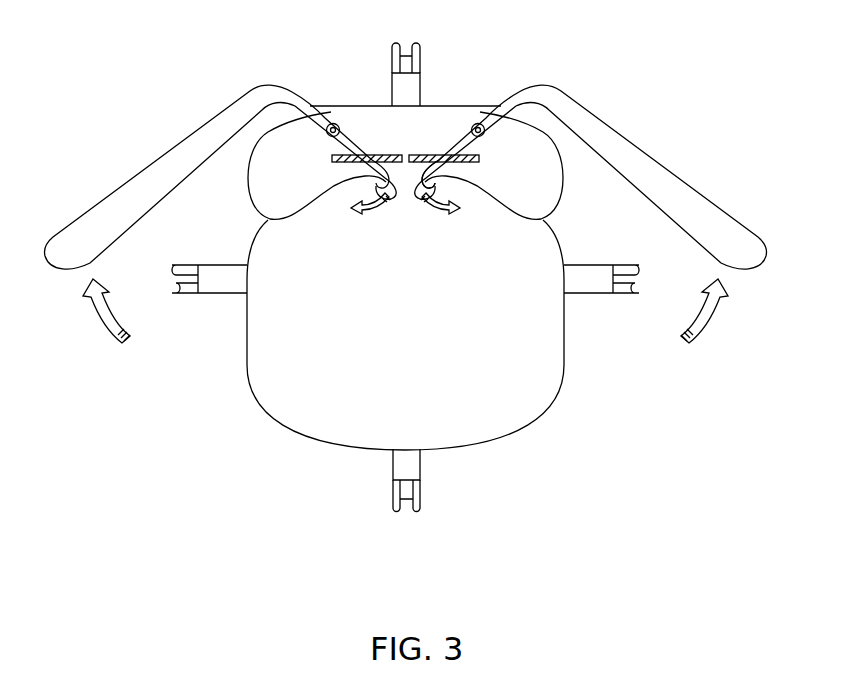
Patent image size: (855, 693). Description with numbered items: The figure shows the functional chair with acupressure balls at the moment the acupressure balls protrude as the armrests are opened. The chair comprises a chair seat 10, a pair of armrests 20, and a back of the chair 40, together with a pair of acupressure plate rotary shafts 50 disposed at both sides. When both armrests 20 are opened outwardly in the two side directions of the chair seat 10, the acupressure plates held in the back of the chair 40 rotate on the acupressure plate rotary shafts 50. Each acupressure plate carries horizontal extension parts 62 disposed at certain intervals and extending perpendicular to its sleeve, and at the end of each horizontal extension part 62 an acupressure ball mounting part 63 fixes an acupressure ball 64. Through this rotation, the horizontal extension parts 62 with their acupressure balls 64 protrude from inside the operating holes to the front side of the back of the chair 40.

The chair seat 10 is at (543, 396).
The armrests 20 is at (114, 196).
The back of a chair 40 is at (231, 107).
The acupressure plate rotary shaft 50 is at (330, 123).
The horizontal extension part 62 is at (430, 146).
The acupressure ball mounting part 63 is at (418, 150).
The acupressure ball 64 is at (403, 150).